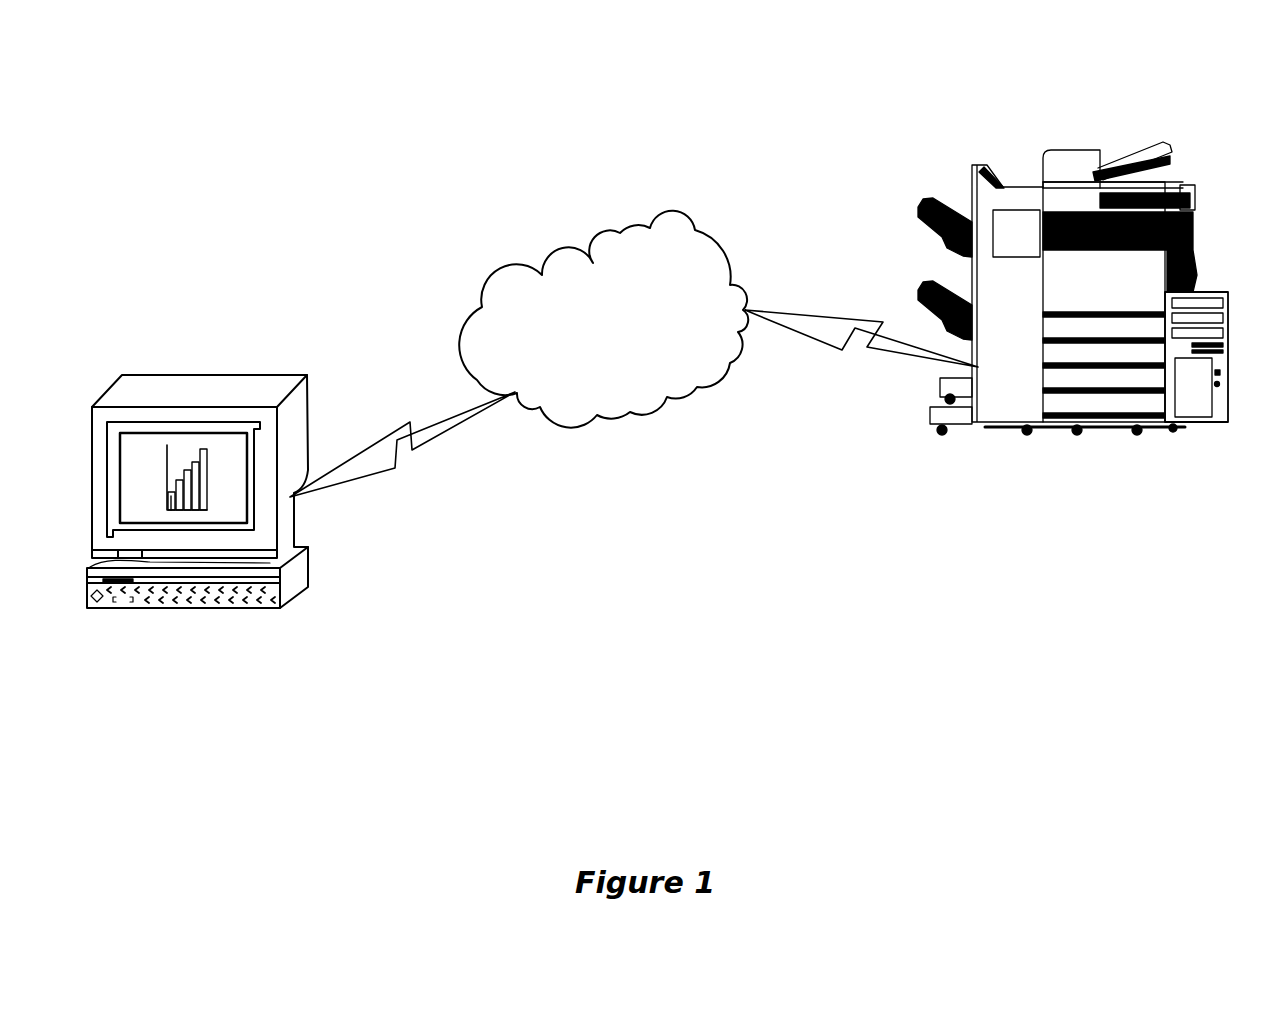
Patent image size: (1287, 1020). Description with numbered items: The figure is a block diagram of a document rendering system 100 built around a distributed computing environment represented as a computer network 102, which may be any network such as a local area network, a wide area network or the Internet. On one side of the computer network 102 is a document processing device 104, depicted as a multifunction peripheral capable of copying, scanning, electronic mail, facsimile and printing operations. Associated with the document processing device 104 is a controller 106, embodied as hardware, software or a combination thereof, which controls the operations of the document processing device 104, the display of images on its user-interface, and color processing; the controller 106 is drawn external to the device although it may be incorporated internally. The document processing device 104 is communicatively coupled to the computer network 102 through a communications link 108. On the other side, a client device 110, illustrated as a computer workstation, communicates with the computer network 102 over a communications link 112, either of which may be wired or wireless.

The document rendering system 100 is at (386, 90).
The computer network 102 is at (675, 203).
The document processing device 104 is at (1068, 145).
The controller 106 is at (1228, 326).
The communications link 108 is at (858, 319).
The client device 110 is at (197, 364).
The communications link 112 is at (378, 438).